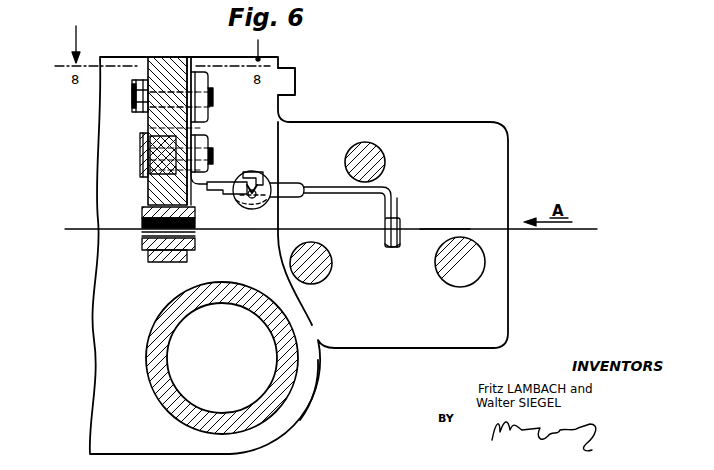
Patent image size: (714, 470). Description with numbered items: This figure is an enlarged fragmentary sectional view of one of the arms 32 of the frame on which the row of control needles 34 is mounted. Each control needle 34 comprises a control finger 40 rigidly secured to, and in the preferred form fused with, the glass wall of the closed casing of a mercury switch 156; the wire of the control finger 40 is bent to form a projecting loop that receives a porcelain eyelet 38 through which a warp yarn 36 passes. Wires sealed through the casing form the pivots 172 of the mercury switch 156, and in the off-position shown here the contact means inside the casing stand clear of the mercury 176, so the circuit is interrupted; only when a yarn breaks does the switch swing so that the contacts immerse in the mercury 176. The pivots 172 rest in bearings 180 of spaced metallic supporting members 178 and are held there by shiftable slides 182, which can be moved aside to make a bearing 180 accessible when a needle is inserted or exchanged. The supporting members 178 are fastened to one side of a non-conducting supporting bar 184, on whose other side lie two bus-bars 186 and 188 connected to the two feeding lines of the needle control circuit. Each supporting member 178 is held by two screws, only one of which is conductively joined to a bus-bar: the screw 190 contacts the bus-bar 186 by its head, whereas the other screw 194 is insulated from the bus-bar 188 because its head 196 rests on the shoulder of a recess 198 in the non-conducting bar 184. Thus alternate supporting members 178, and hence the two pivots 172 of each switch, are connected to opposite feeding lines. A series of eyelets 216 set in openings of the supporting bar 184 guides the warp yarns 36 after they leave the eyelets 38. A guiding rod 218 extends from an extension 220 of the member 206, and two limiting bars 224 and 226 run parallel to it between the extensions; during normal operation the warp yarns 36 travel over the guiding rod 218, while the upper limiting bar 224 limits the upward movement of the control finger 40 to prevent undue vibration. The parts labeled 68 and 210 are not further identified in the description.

The arm 32 is at (320, 379).
The control needle 34 is at (384, 183).
The warp yarn 36 is at (422, 230).
The eyelet 38 is at (399, 247).
The control finger 40 is at (400, 200).
The lug 68 is at (297, 78).
The mercury switch 156 is at (280, 178).
The pivots 172 is at (252, 171).
The mercury 176 is at (262, 200).
The supporting member 178 is at (214, 182).
The bearing 180 is at (240, 198).
The shiftable slide 182 is at (250, 172).
The supporting bar 184 is at (178, 57).
The bus-bar 186 is at (146, 116).
The bus-bar 188 is at (140, 150).
The screw 190 is at (132, 95).
The screw 194 is at (208, 176).
The head 196 is at (150, 170).
The recess 198 is at (150, 128).
The member 206 is at (226, 46).
The bearing bore 210 is at (157, 368).
The eyelet 216 is at (140, 246).
The guiding rod 218 is at (470, 262).
The extension 220 is at (460, 124).
The upper limiting bar 224 is at (366, 150).
The limiting bar 226 is at (320, 258).